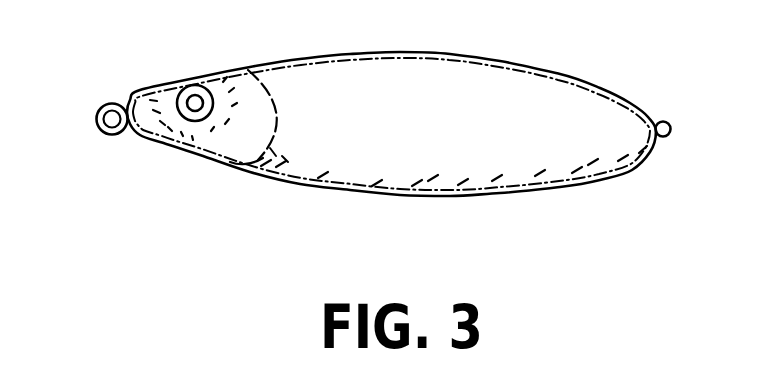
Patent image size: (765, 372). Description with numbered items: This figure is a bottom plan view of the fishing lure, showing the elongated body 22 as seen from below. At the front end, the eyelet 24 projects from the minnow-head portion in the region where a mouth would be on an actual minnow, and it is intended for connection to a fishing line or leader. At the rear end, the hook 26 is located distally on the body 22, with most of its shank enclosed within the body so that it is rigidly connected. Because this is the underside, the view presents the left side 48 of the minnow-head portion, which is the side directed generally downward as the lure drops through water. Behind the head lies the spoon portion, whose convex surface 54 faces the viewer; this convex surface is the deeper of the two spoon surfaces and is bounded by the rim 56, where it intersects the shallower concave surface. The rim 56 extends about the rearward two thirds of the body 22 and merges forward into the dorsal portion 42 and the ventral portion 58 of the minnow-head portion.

The elongated body 22 is at (393, 165).
The eyelet 24 is at (97, 110).
The hook 26 is at (672, 118).
The dorsal portion 42 is at (210, 76).
The left side 48 is at (190, 92).
The convex surface 54 is at (481, 135).
The rim 56 is at (513, 62).
The ventral portion 58 is at (204, 166).